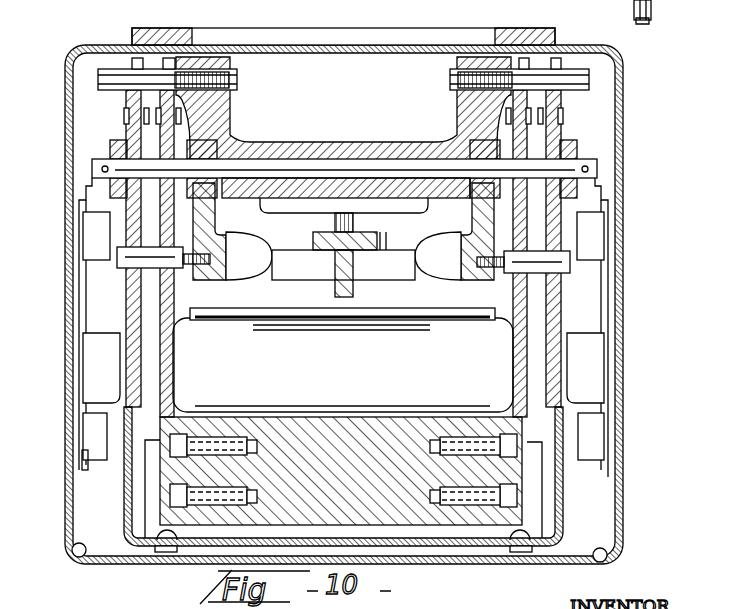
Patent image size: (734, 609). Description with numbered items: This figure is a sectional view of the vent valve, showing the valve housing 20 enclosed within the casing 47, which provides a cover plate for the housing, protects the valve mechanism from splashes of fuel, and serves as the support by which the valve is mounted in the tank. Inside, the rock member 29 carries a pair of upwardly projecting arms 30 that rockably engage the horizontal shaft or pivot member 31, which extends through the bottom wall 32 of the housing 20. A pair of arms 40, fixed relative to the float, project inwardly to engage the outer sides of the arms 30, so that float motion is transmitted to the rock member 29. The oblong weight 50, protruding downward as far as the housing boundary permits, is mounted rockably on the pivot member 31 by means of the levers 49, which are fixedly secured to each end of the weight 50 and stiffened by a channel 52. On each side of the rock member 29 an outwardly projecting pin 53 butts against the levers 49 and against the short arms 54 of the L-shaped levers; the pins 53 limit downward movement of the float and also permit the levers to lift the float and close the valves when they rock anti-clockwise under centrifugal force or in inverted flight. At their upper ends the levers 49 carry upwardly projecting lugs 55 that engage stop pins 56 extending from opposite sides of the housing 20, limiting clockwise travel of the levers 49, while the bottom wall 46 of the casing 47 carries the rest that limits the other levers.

The valve housing 20 is at (343, 23).
The rock member 29 is at (292, 242).
The upwardly projecting arms 30 is at (346, 205).
The horizontal shaft or pivot member 31 is at (323, 170).
The bottom wall 32 is at (383, 143).
The arms 40 is at (183, 285).
The bottom wall 46 is at (493, 567).
The casing 47 is at (628, 64).
The levers 49 is at (518, 315).
The weight 50 is at (348, 427).
The channel 52 is at (377, 310).
The pin 53 is at (120, 270).
The short arms 54 is at (570, 323).
The upwardly projecting lugs 55 is at (523, 60).
The stop pins 56 is at (106, 90).